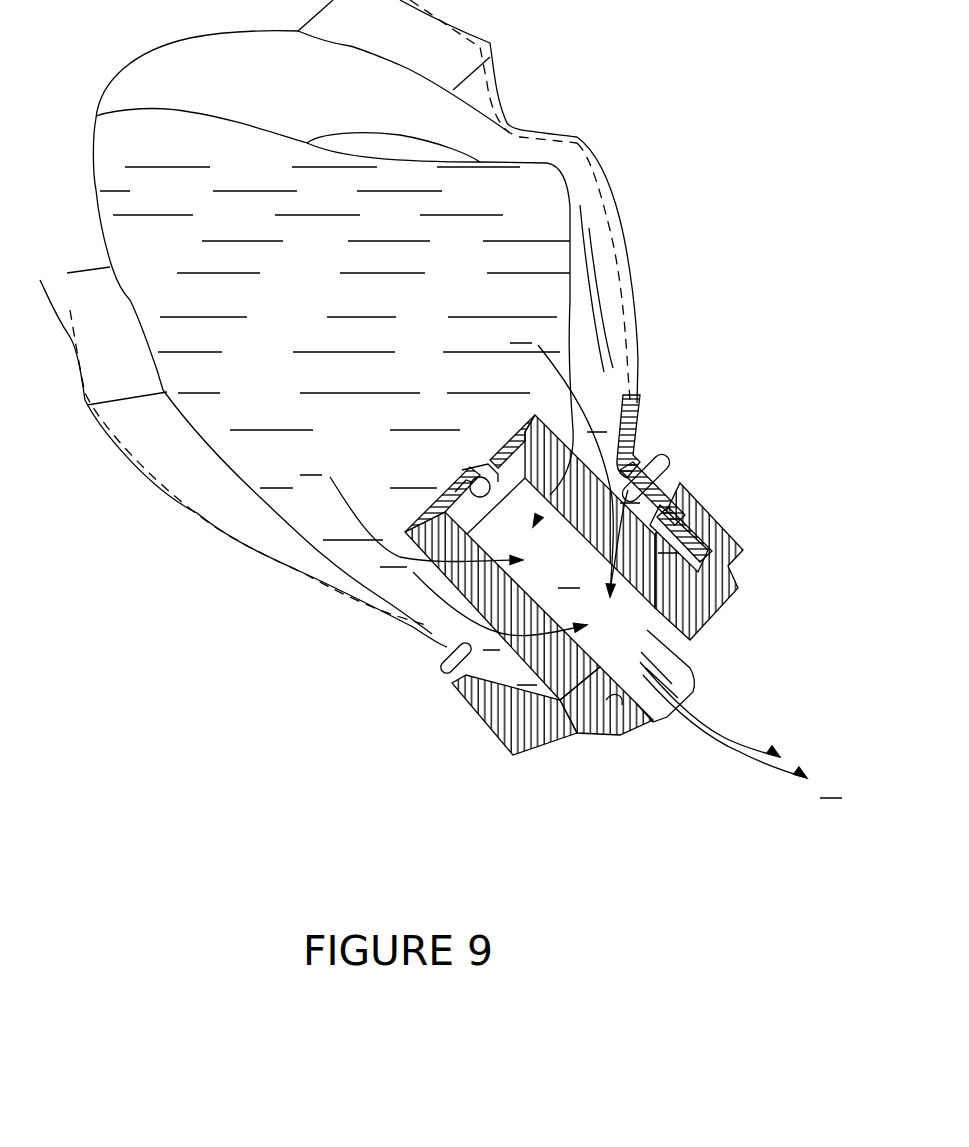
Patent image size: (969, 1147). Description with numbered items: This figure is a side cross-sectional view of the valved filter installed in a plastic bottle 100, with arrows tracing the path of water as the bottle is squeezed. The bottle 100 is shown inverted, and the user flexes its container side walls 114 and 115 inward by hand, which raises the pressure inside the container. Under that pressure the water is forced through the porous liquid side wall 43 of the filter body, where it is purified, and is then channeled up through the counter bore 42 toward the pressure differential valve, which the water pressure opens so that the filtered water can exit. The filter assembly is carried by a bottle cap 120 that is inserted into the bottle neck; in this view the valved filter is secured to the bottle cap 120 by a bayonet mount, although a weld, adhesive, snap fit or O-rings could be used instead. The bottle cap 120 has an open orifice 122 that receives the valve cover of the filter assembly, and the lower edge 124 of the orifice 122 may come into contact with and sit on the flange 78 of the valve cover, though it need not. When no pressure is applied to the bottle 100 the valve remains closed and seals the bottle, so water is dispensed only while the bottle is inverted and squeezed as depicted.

The bottle 100 is at (441, 406).
The container side wall 114 is at (630, 257).
The container side wall 115 is at (197, 513).
The porous liquid side wall 43 is at (670, 468).
The counter bore 42 is at (493, 628).
The bottle cap 120 is at (463, 710).
The open orifice 122 is at (690, 667).
The lower edge 124 is at (603, 702).
The flange 78 is at (610, 707).